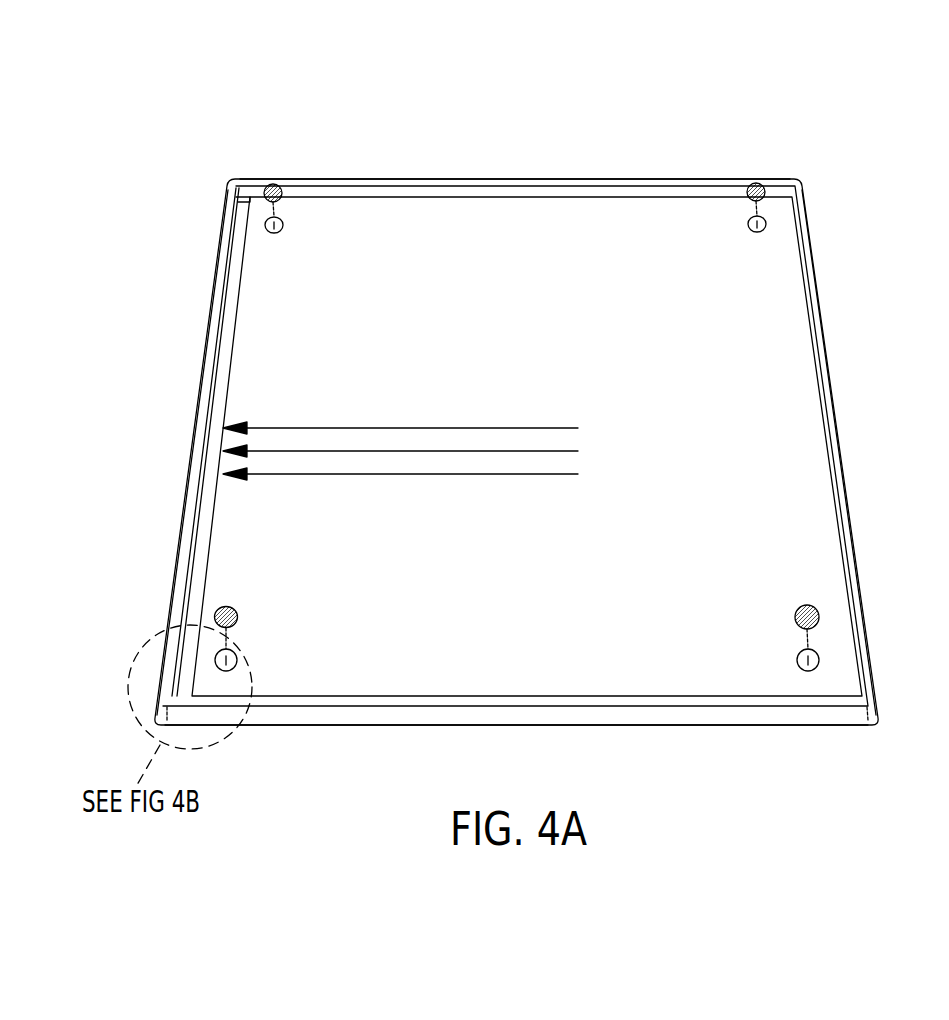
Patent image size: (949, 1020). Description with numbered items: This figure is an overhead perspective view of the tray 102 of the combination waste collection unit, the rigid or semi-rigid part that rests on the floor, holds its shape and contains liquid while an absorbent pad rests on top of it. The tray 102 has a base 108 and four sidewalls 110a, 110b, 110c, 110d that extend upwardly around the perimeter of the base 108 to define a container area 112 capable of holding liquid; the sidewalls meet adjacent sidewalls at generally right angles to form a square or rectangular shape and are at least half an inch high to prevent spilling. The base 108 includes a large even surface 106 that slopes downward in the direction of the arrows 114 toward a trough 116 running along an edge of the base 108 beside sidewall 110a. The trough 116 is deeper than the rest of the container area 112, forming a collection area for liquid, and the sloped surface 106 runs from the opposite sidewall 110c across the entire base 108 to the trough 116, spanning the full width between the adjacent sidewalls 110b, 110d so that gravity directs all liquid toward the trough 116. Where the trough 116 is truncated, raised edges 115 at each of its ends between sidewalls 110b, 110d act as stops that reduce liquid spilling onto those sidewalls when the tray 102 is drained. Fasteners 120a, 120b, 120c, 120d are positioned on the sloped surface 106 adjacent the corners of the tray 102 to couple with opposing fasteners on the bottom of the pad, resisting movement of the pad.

The tray 102 is at (188, 207).
The surface 106 is at (793, 385).
The base 108 is at (797, 570).
The sidewall 110a is at (178, 542).
The sidewall 110b is at (647, 178).
The sidewall 110c is at (815, 255).
The sidewall 110d is at (735, 712).
The container area 112 is at (498, 218).
The arrows 114 is at (340, 428).
The raised edges 115 is at (246, 192).
The trough 116 is at (225, 285).
The fastener 120a is at (214, 613).
The fastener 120b is at (275, 185).
The fastener 120c is at (757, 183).
The fastener 120d is at (820, 620).